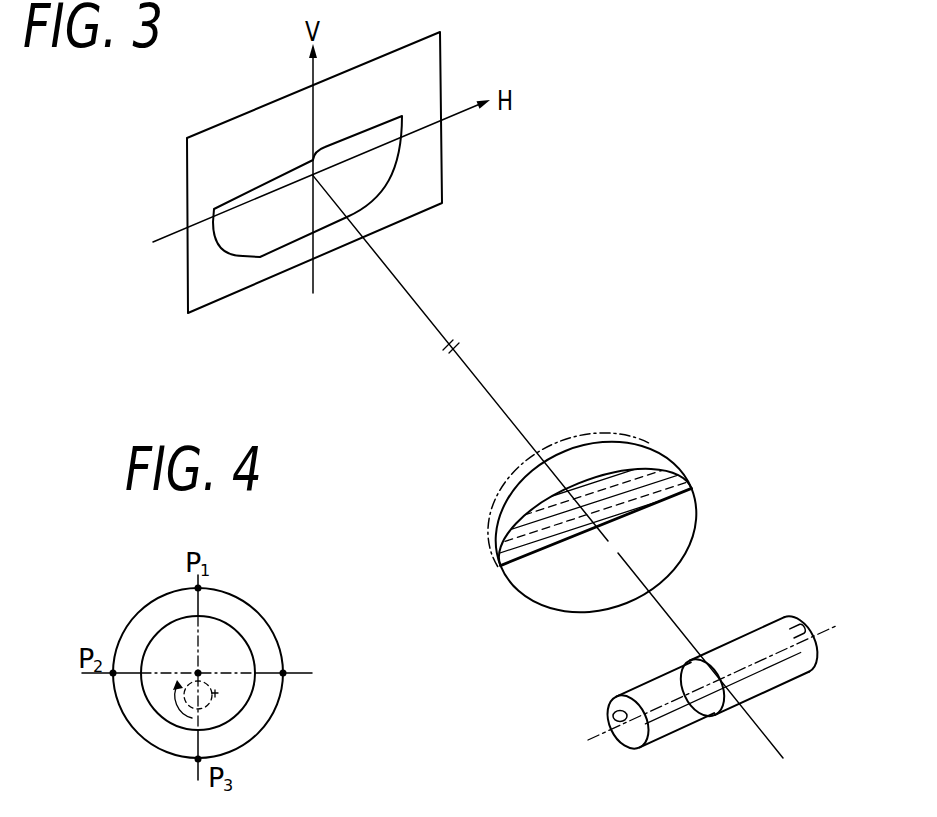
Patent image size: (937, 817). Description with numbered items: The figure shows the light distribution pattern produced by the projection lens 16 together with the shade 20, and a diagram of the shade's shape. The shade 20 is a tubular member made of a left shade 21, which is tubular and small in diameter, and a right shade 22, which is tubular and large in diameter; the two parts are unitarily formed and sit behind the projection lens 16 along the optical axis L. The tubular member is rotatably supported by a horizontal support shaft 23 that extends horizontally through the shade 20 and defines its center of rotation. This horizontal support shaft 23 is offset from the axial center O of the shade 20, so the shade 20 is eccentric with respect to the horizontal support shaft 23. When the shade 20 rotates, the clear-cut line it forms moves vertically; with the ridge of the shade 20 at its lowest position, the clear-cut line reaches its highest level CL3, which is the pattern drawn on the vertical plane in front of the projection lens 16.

In FIG. 3, the projection lens 16 is at (680, 510).
In FIG. 3, the shade 20 is at (706, 651).
In FIG. 4, the shade 20 is at (225, 648).
In FIG. 3, the left shade 21 is at (762, 643).
In FIG. 4, the left shade 21 is at (253, 653).
In FIG. 3, the right shade 22 is at (680, 672).
In FIG. 4, the right shade 22 is at (264, 626).
In FIG. 3, the horizontal support shaft 23 is at (612, 713).
In FIG. 4, the horizontal support shaft 23 is at (212, 695).
In FIG. 3, the optical axis L is at (497, 403).
In FIG. 3, the axial center O is at (822, 635).
In FIG. 4, the axial center O is at (198, 673).
In FIG. 3, the clear-cut line level CL3 is at (277, 177).